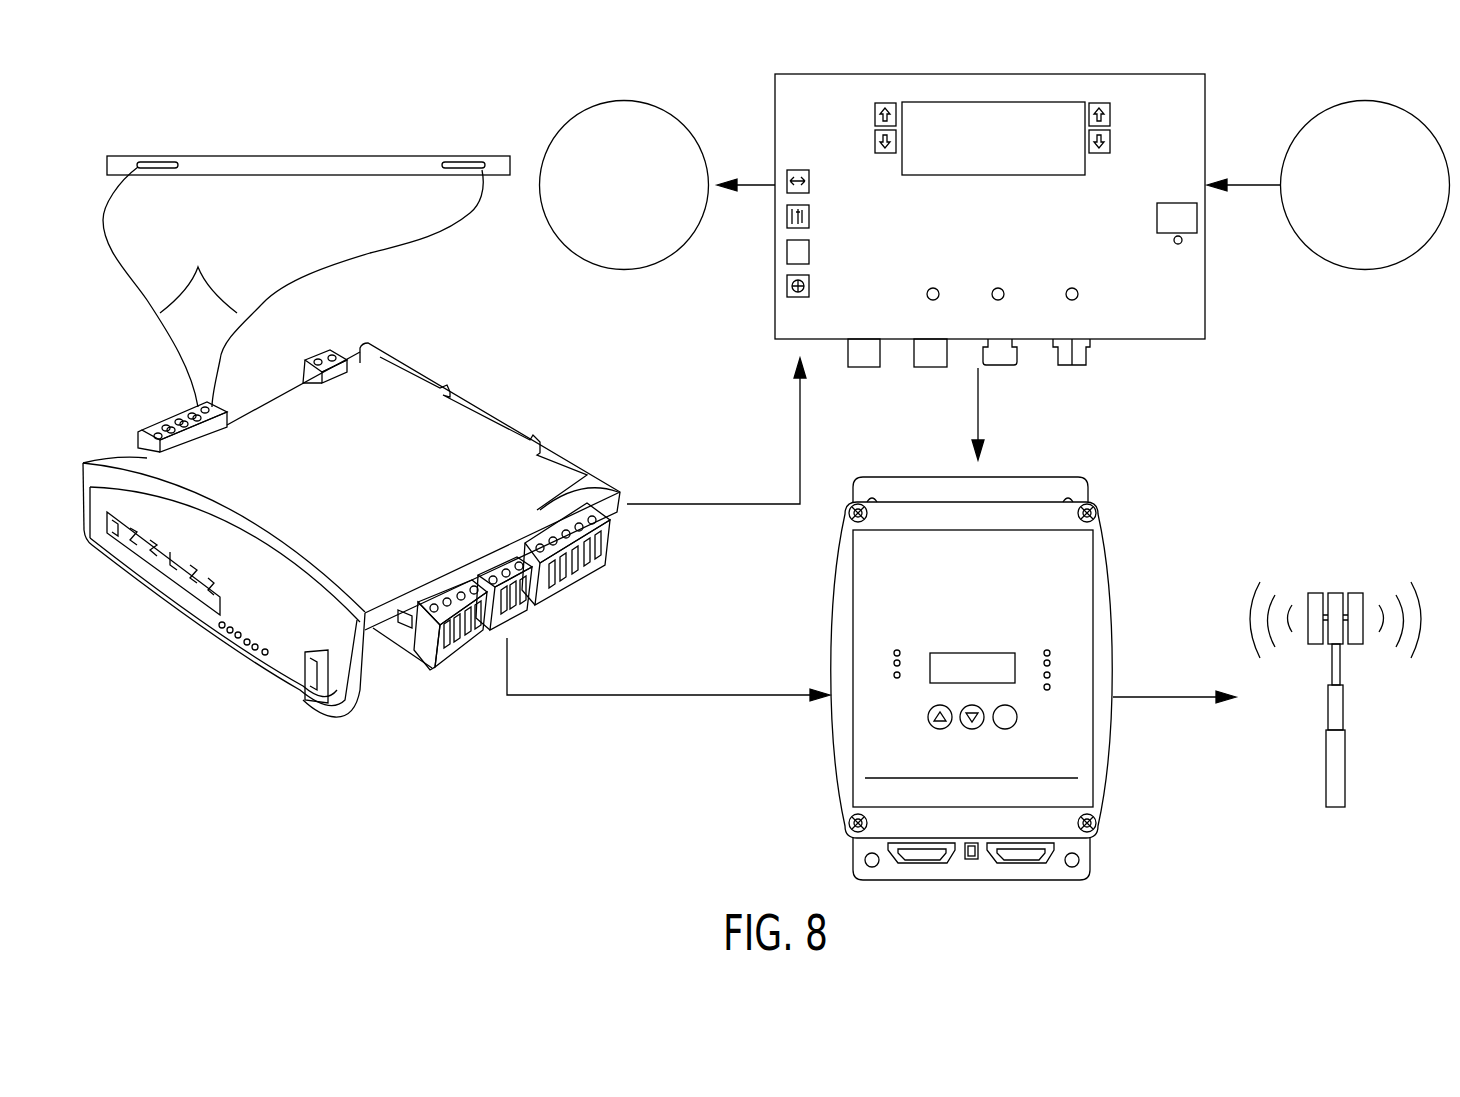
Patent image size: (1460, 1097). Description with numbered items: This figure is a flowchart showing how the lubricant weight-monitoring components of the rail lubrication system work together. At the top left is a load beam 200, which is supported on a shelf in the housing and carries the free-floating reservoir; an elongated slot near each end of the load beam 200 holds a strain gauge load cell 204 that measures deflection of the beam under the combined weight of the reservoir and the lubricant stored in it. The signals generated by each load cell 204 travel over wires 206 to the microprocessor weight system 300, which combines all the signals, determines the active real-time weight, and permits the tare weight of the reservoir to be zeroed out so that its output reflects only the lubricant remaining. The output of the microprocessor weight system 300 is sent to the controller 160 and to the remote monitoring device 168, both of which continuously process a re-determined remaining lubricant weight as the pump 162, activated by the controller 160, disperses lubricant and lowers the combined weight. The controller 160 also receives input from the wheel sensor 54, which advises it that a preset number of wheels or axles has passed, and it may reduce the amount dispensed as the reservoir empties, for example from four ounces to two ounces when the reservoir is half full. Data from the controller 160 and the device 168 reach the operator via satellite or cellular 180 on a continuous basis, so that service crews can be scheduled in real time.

The sensor 54 is at (1420, 117).
The controller 160 is at (1207, 112).
The pump 162 is at (685, 127).
The remote monitoring device 168 is at (1033, 477).
The satellite or cellular 180 is at (1335, 593).
The load beam 200 is at (287, 149).
The strain gauge load cell 204 is at (160, 162).
The wires 206 is at (293, 287).
The microprocessor weight system 300 is at (360, 630).